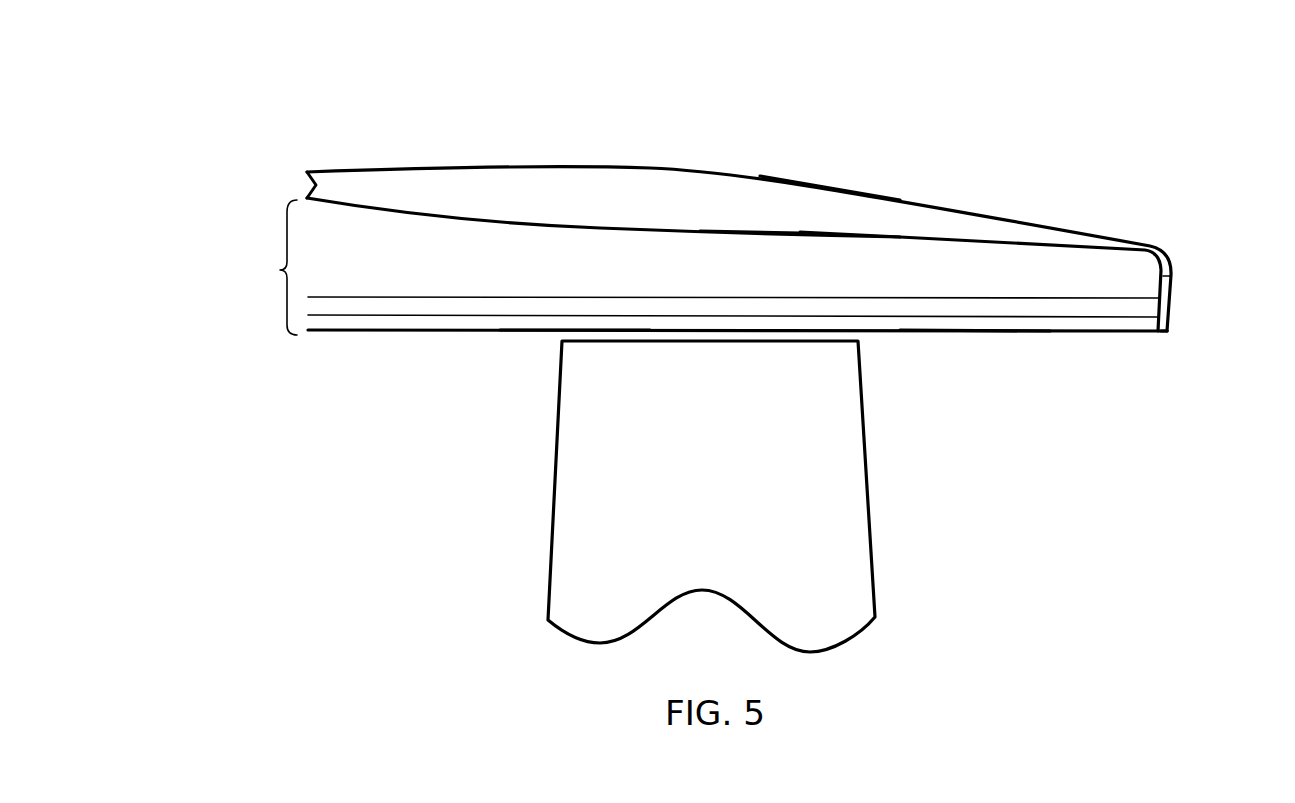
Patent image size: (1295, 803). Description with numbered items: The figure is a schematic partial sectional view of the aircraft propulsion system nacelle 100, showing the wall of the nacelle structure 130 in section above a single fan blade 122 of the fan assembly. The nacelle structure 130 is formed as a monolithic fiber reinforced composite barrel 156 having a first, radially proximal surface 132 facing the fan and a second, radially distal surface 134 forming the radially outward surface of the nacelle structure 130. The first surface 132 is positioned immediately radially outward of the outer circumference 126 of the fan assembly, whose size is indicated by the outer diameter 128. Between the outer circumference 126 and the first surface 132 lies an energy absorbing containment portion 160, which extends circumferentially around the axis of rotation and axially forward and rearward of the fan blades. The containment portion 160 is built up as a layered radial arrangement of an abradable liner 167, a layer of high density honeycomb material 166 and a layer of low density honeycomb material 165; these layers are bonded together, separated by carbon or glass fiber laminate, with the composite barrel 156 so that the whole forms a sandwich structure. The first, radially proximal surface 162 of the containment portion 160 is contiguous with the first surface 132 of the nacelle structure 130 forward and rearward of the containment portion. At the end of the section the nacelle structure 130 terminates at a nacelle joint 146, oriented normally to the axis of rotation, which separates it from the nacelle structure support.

The aircraft propulsion system nacelle 100 is at (1176, 117).
The fan blade 122 is at (848, 555).
The outer circumference 126 is at (688, 340).
The outer diameter 128 is at (832, 341).
The nacelle structure 130 is at (660, 170).
The first, radially proximal surface 132 is at (782, 233).
The second, radially distal surface 134 is at (765, 177).
The nacelle joint 146 is at (1175, 273).
The fiber reinforced composite barrel 156 is at (470, 185).
The containment portion 160 is at (280, 270).
The first, radially proximal surface of the containment portion 162 is at (757, 333).
The layer of low density honeycomb material 165 is at (830, 258).
The layer of high density honeycomb material 166 is at (573, 306).
The abradable liner 167 is at (947, 324).